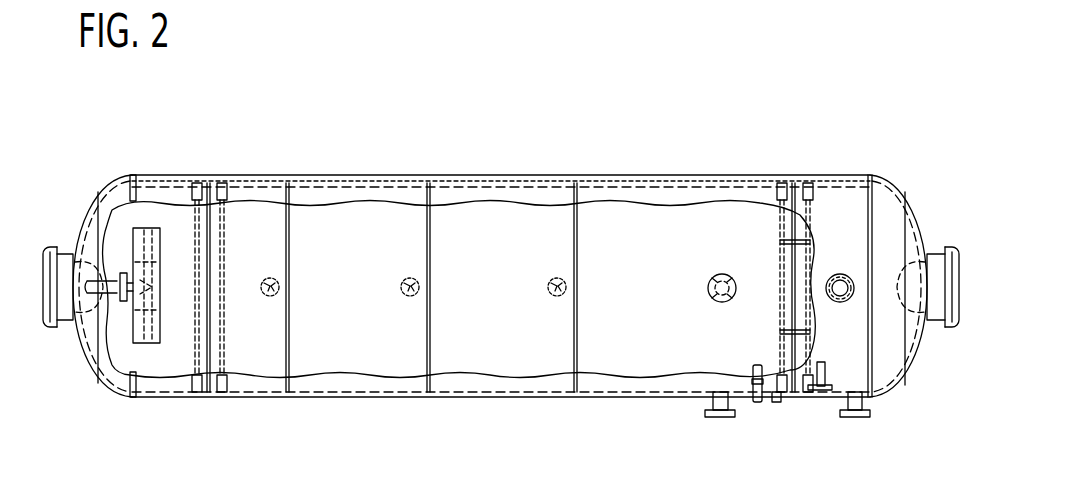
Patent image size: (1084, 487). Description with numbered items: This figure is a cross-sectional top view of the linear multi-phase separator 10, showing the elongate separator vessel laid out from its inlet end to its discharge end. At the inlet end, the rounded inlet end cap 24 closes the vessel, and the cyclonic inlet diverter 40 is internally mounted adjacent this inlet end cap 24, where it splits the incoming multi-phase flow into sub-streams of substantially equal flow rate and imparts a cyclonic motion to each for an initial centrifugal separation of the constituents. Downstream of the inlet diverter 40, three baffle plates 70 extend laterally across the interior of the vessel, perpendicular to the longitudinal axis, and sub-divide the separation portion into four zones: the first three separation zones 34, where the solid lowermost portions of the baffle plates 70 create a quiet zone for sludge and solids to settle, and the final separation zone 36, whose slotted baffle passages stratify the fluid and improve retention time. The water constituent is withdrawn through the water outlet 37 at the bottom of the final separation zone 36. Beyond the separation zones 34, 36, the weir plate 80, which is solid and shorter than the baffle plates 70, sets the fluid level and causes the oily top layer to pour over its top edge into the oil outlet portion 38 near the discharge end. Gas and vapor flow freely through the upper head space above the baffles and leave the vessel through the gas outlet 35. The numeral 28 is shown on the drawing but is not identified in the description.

The multi-phase separator 10 is at (638, 132).
The inlet end cap 24 is at (85, 360).
The second head 28 is at (913, 357).
The separation zones 34 is at (268, 334).
The gas outlet 35 is at (840, 302).
The final separation zone 36 is at (655, 334).
The water outlet 37 is at (720, 276).
The oil outlet portion 38 is at (858, 234).
The cyclonic inlet diverter 40 is at (150, 226).
The baffle plates 70 is at (288, 247).
The weir plate 80 is at (792, 232).